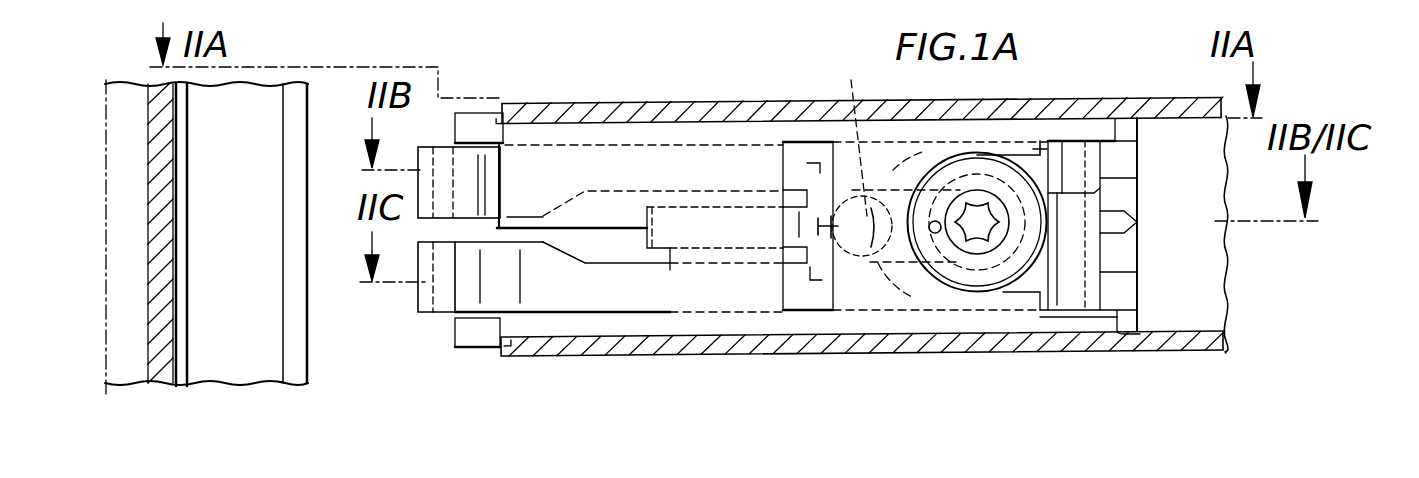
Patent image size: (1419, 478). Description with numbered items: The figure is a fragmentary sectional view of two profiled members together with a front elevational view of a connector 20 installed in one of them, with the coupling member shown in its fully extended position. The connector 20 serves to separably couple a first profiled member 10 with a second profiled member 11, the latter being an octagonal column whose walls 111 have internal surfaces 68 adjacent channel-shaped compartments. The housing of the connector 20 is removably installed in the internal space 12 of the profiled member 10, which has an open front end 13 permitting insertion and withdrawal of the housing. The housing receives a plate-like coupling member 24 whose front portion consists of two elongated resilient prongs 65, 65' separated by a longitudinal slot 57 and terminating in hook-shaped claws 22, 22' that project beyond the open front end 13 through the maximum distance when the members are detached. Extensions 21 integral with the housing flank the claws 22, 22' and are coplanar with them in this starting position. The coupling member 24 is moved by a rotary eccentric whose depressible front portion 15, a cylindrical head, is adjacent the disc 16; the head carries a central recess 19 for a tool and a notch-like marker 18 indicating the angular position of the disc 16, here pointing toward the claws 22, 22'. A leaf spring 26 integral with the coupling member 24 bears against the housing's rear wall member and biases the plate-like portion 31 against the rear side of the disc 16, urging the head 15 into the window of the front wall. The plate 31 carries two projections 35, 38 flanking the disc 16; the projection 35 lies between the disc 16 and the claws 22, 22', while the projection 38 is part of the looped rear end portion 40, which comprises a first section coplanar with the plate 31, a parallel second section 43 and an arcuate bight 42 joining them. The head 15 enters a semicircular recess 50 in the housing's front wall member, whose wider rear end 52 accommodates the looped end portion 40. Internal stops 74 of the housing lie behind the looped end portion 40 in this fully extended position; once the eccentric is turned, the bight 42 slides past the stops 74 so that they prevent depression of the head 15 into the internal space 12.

The first profiled member 10 is at (694, 83).
The second profiled member 11 is at (313, 127).
The internal space 12 is at (1192, 185).
The open front end 13 is at (505, 348).
The front portion 15 is at (990, 273).
The disc 16 is at (879, 268).
The marker 18 is at (937, 231).
The recess 19 is at (974, 236).
The connector 20 is at (1150, 305).
The extensions 21 is at (480, 127).
The claw 22 is at (447, 167).
The claw 22' is at (429, 327).
The coupling member 24 is at (805, 152).
The leaf spring 26 is at (663, 245).
The plate-like portion 31 is at (827, 298).
The projection 35 is at (870, 177).
The projection 38 is at (1050, 232).
The looped rear end portion 40 is at (1083, 187).
The arcuate bight 42 is at (1122, 250).
The second section 43 is at (1073, 160).
The semicircular recess 50 is at (1023, 150).
The wider rear end 52 is at (1062, 135).
The slot 57 is at (480, 230).
The prong 65 is at (776, 139).
The prong 65' is at (747, 327).
The internal surface 68 is at (283, 185).
The stop 74 is at (1122, 162).
The wall 111 is at (292, 220).